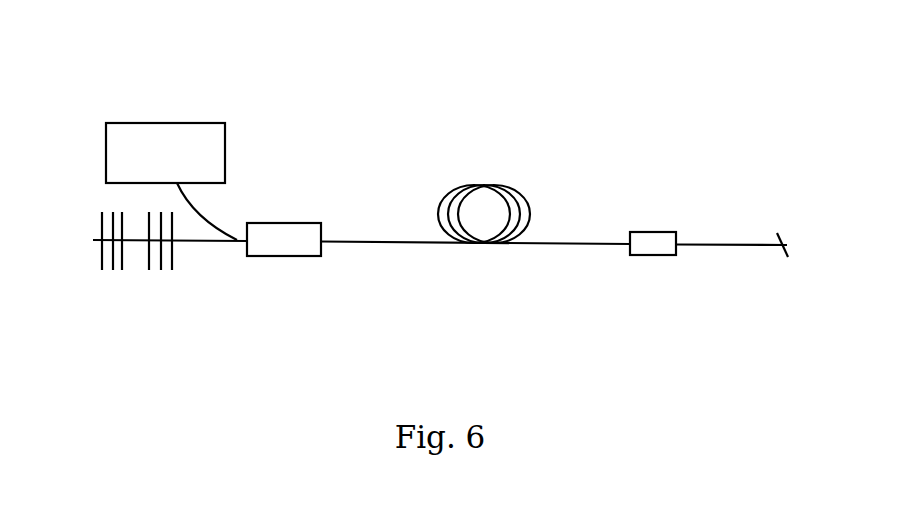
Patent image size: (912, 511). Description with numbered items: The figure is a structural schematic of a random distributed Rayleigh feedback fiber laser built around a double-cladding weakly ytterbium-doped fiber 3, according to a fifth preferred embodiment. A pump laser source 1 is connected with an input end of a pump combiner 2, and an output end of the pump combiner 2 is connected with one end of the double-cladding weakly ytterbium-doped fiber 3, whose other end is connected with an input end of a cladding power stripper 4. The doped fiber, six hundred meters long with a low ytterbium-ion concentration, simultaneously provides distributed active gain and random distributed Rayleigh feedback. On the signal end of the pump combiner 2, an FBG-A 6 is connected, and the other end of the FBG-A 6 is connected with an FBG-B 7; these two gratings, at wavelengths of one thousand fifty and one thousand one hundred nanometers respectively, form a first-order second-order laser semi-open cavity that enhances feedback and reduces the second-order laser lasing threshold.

The pump laser source 1 is at (163, 123).
The pump combiner 2 is at (283, 223).
The double-cladding weakly ytterbium-doped fiber 3 is at (479, 185).
The cladding power stripper 4 is at (653, 232).
The FBG-A 6 is at (161, 270).
The FBG-B 7 is at (113, 270).